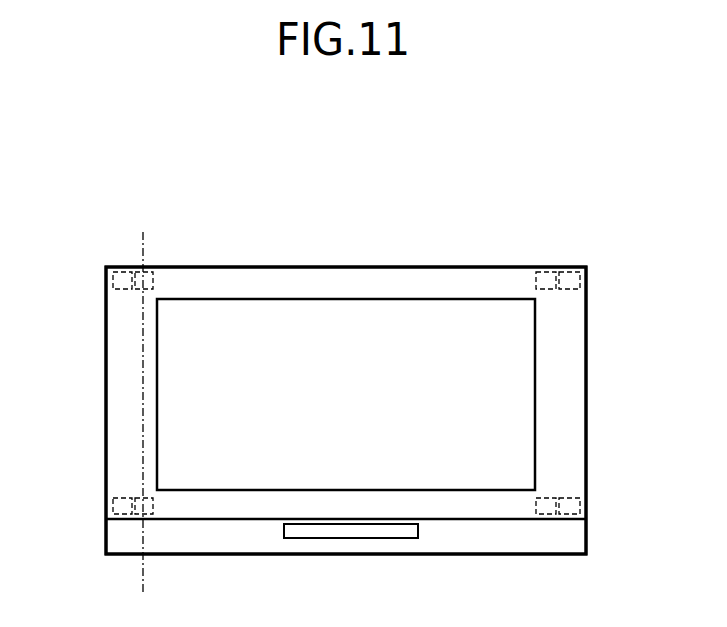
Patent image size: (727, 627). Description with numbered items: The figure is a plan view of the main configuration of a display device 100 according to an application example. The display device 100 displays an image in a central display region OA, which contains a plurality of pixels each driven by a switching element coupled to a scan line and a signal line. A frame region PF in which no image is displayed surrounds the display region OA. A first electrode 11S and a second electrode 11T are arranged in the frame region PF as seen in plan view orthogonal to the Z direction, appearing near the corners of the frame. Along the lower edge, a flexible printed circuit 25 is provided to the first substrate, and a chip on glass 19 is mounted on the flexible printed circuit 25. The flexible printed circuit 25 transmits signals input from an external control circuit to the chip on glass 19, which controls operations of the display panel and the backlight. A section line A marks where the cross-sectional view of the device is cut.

The display device 100 is at (331, 182).
The frame region PF is at (573, 394).
The display region OA is at (400, 323).
The flexible printed circuit 25 is at (573, 540).
The chip on glass 19 is at (368, 540).
The second electrode 11T is at (115, 278).
The first electrode 11S is at (148, 268).
The line A- A is at (143, 243).